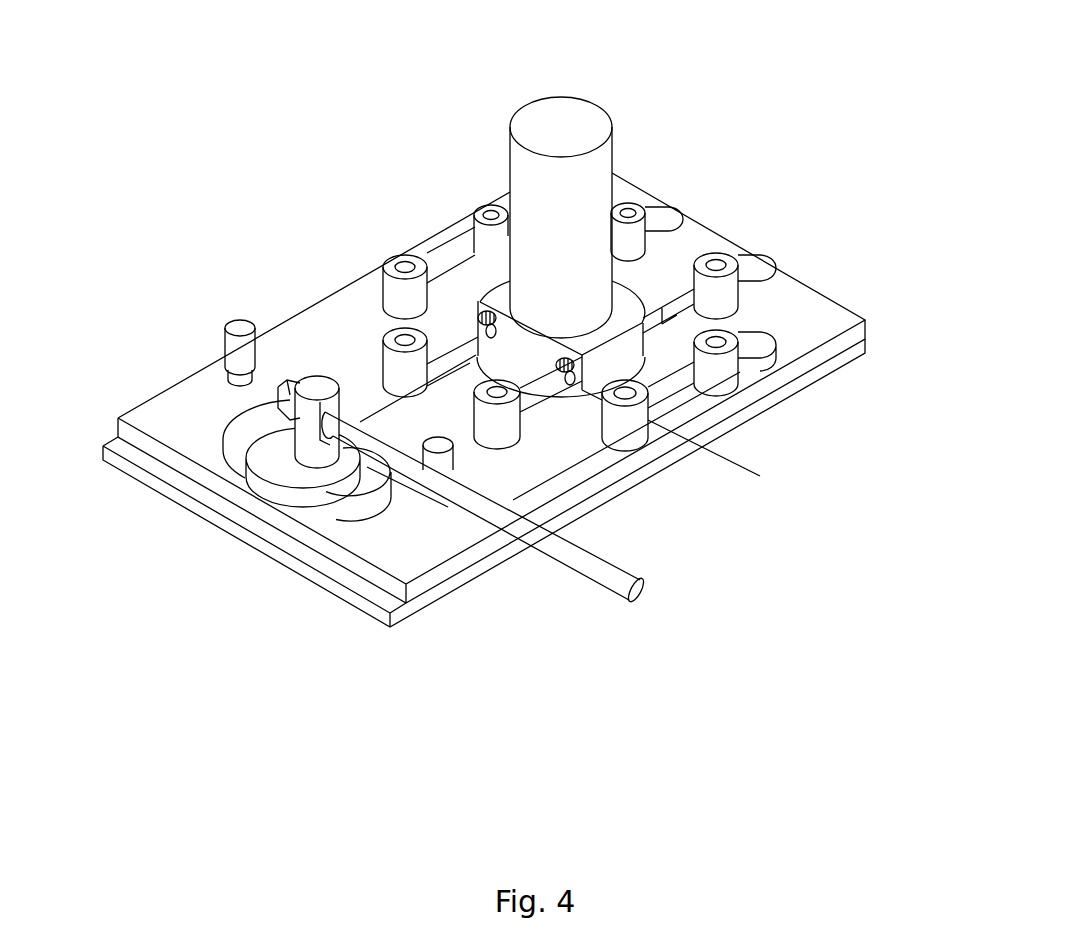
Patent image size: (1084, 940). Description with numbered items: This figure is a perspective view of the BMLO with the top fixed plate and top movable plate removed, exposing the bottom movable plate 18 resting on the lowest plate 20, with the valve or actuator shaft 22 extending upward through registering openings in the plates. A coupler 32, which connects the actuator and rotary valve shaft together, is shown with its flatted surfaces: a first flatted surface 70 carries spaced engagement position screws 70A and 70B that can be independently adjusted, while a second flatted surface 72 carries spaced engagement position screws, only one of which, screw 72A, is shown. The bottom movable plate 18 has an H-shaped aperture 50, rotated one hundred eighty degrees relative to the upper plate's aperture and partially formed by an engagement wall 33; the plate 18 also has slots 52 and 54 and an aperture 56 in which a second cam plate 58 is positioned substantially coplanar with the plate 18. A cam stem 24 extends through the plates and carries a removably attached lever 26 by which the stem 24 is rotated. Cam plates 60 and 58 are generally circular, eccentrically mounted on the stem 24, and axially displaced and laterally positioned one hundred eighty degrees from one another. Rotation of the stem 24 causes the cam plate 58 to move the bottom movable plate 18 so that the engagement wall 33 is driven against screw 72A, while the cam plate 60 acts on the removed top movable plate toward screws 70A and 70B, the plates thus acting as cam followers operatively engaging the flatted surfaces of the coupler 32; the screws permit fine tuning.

The bottom movable plate 18 is at (137, 438).
The plate 20 is at (398, 617).
The valve shaft or actuator shaft 22 is at (583, 165).
The cam stem 24 is at (308, 422).
The lever 26 is at (617, 590).
The coupler 32 is at (607, 337).
The engagement wall 33 is at (670, 325).
The H-shaped aperture 50 is at (645, 327).
The slot 52 is at (750, 358).
The slot 54 is at (450, 258).
The aperture 56 is at (368, 492).
The second cam plate 58 is at (372, 497).
The cam plate 60 is at (285, 477).
The first flatted surface 70 is at (532, 347).
The engagement position screw 70A is at (486, 318).
The engagement position screw 70B is at (573, 375).
The second flatted surface 72 is at (626, 310).
The engagement position screw 72A is at (647, 347).